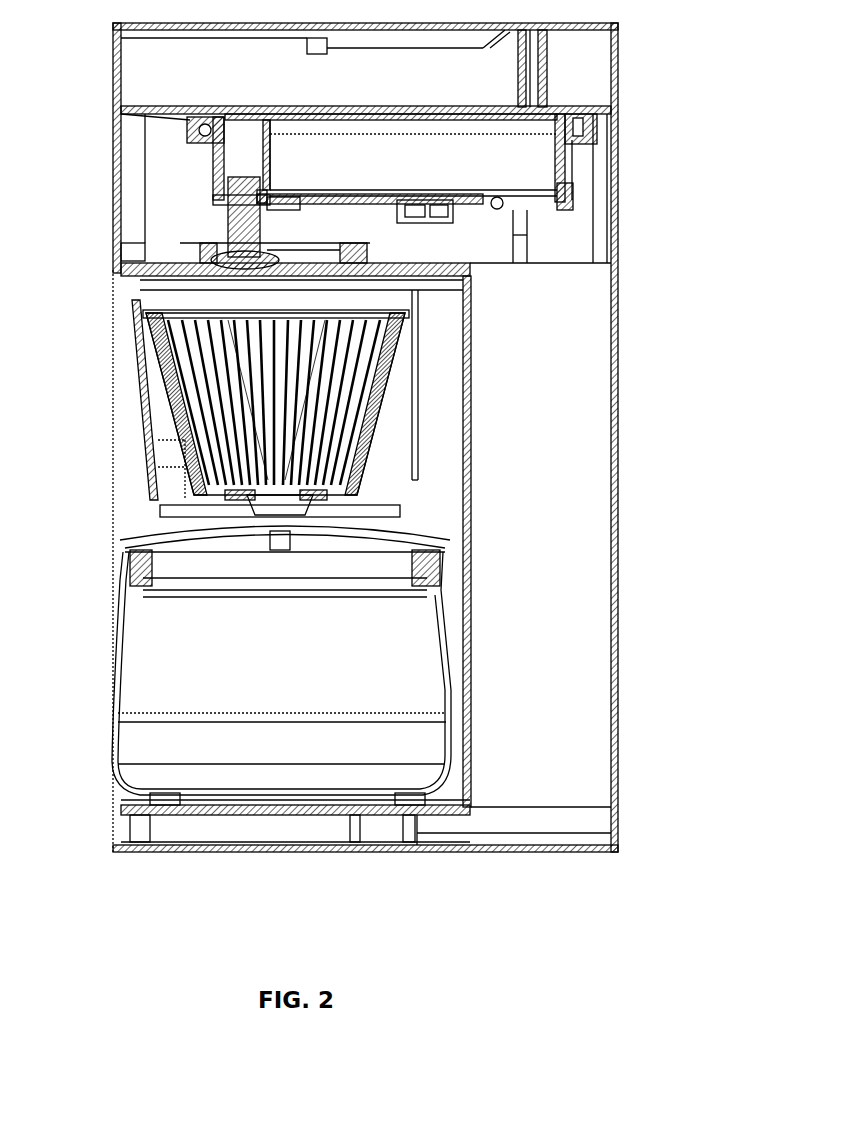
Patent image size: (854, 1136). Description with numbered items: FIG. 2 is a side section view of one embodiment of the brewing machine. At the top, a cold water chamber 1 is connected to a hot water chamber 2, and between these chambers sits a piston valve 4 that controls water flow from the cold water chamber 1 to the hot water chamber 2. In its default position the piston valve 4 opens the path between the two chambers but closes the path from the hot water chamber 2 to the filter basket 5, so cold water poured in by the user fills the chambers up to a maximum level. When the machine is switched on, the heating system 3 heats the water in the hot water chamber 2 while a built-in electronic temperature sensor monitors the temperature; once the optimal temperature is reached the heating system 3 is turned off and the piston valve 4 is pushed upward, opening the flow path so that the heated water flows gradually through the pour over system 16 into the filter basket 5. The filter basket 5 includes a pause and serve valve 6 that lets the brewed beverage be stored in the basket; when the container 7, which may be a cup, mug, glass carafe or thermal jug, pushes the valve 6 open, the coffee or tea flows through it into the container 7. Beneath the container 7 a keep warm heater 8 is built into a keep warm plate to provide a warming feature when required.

The cold water chamber 1 is at (575, 74).
The hot water chamber 2 is at (568, 162).
The heating system 3 is at (503, 207).
The piston valve 4 is at (245, 218).
The pour over system 16 is at (243, 260).
The filter basket 5 is at (183, 389).
The pause and serve valve 6 is at (280, 508).
The container 7 is at (112, 713).
The keep warm heater 8 is at (224, 812).